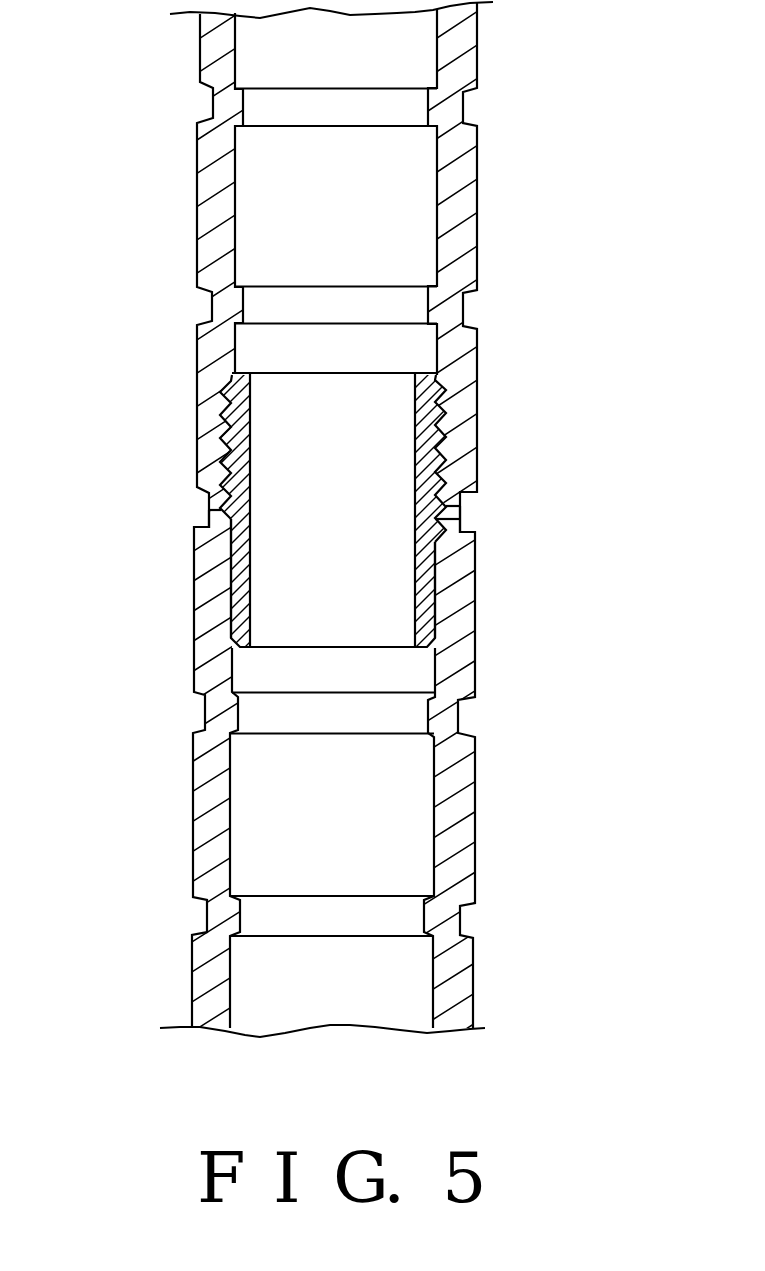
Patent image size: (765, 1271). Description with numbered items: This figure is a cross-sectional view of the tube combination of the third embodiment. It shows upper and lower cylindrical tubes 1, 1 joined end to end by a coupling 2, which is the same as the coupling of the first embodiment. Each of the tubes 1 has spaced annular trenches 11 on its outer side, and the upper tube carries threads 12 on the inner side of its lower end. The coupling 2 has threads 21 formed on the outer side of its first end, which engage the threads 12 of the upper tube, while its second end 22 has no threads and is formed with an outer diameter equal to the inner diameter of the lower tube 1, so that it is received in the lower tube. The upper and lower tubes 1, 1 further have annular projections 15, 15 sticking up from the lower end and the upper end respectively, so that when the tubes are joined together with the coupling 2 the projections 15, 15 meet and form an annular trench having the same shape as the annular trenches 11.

The cylindrical tube 1 is at (407, 208).
The coupling 2 is at (290, 560).
The annular trench 11 is at (460, 715).
The threads 12 is at (228, 445).
The annular projection 15 is at (447, 505).
The threads 21 is at (428, 465).
The second end 22 is at (427, 587).